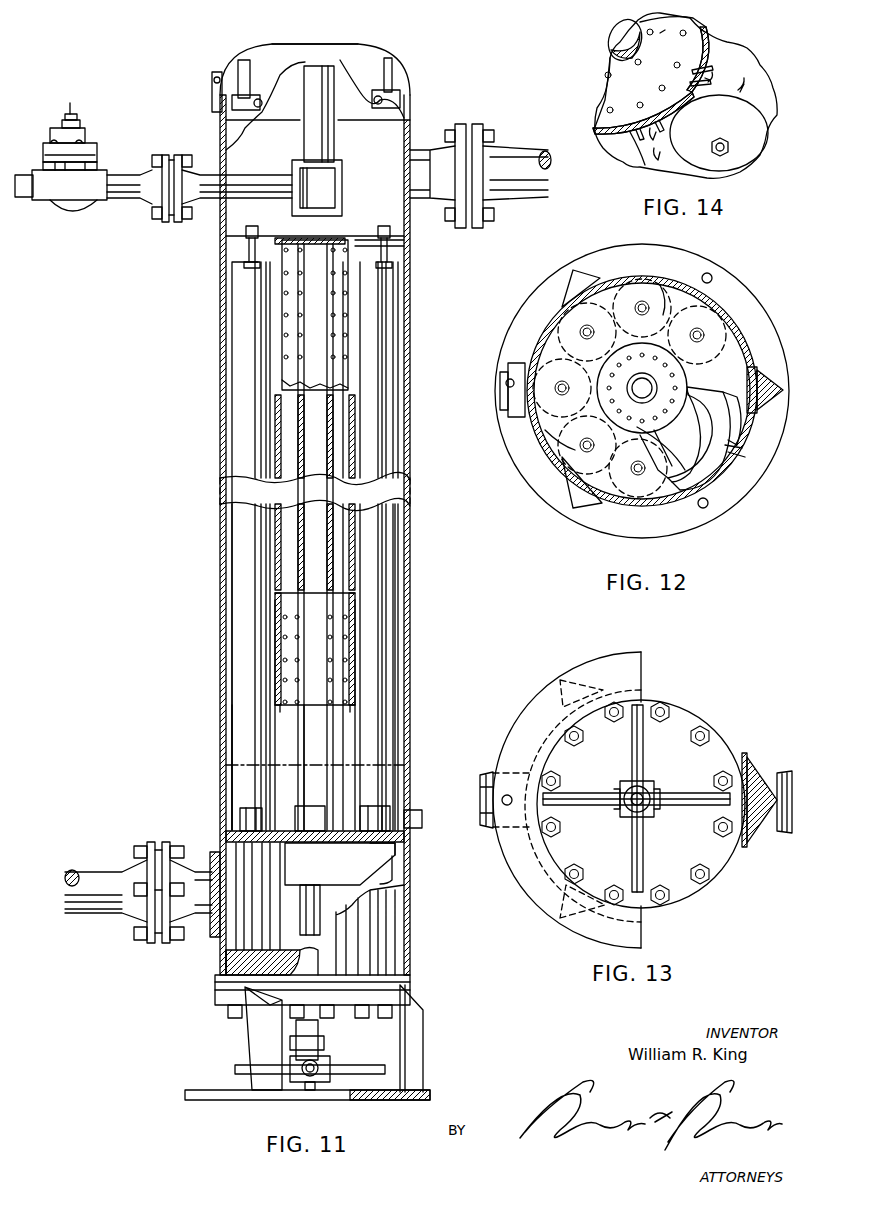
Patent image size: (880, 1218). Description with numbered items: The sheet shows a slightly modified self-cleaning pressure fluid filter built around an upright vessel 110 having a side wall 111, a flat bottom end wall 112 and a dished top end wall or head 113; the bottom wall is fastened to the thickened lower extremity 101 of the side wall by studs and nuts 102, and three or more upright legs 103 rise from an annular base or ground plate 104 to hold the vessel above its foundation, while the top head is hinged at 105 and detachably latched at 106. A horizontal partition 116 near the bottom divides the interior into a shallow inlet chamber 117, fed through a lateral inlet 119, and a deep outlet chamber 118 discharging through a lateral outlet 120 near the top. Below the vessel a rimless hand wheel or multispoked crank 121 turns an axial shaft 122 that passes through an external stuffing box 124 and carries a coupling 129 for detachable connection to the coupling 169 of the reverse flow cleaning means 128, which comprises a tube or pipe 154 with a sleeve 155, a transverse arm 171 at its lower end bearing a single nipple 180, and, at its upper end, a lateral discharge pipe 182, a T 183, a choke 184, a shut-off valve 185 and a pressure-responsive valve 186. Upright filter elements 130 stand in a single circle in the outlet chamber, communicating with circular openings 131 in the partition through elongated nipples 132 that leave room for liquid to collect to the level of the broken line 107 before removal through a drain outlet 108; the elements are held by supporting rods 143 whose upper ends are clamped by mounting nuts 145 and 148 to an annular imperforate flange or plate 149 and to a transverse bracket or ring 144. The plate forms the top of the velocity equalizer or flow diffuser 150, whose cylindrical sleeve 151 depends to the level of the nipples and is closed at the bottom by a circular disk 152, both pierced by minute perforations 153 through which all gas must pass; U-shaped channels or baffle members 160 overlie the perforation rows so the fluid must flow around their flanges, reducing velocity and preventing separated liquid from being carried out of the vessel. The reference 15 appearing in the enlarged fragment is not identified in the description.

In FIG. 14, the section indication 15 is at (653, 35).
In FIG. 11, the lower extremity 101 is at (216, 958).
In FIG. 11, the studs and nuts 102 is at (226, 1016).
In FIG. 13, the studs and nuts 102 is at (700, 866).
In FIG. 11, the upright legs 103 is at (425, 1026).
In FIG. 12, the upright legs 103 is at (576, 502).
In FIG. 13, the upright legs 103 is at (758, 782).
In FIG. 11, the annular base or ground plate 104 is at (206, 1090).
In FIG. 12, the annular base or ground plate 104 is at (742, 284).
In FIG. 13, the annular base or ground plate 104 is at (538, 900).
In FIG. 11, the hinge 105 is at (212, 93).
In FIG. 11, the latch 106 is at (407, 82).
In FIG. 11, the broken line 107 is at (350, 768).
In FIG. 11, the drain outlet 108 is at (420, 812).
In FIG. 12, the drain outlet 108 is at (768, 382).
In FIG. 11, the upright vessel 110 is at (226, 380).
In FIG. 11, the side wall 111 is at (412, 506).
In FIG. 11, the bottom end wall 112 is at (402, 986).
In FIG. 13, the bottom end wall 112 is at (682, 705).
In FIG. 11, the top end wall or head 113 is at (352, 50).
In FIG. 11, the partition 116 is at (350, 843).
In FIG. 14, the partition 116 is at (760, 87).
In FIG. 11, the inlet chamber 117 is at (396, 893).
In FIG. 11, the outlet chamber 118 is at (268, 150).
In FIG. 11, the lateral inlet 119 is at (106, 918).
In FIG. 12, the lateral inlet 119 is at (511, 388).
In FIG. 13, the lateral inlet 119 is at (486, 774).
In FIG. 11, the lateral outlet 120 is at (516, 196).
In FIG. 13, the lateral outlet 120 is at (785, 838).
In FIG. 11, the hand wheel or multispoked crank 121 is at (312, 942).
In FIG. 13, the hand wheel or multispoked crank 121 is at (690, 784).
In FIG. 13, the axial shaft 122 is at (632, 797).
In FIG. 11, the stuffing box 124 is at (325, 1028).
In FIG. 13, the stuffing box 124 is at (650, 815).
In FIG. 11, the reverse flow cleaning means 128 is at (356, 748).
In FIG. 11, the coupling 129 is at (322, 926).
In FIG. 11, the filter elements 130 is at (240, 540).
In FIG. 14, the filter elements 130 is at (757, 132).
In FIG. 12, the filter elements 130 is at (710, 462).
In FIG. 11, the circular openings 131 is at (248, 826).
In FIG. 11, the nipples 132 is at (240, 780).
In FIG. 11, the supporting rods 143 is at (380, 248).
In FIG. 14, the supporting rods 143 is at (726, 155).
In FIG. 11, the bracket or ring 144 is at (246, 240).
In FIG. 12, the bracket or ring 144 is at (737, 397).
In FIG. 11, the mounting nuts 145 is at (384, 230).
In FIG. 12, the mounting nuts 145 is at (584, 330).
In FIG. 11, the mounting nuts 148 is at (250, 266).
In FIG. 11, the annular imperforate flange or plate 149 is at (285, 220).
In FIG. 12, the annular imperforate flange or plate 149 is at (668, 292).
In FIG. 11, the velocity equalizer or flow diffuser 150 is at (278, 633).
In FIG. 14, the velocity equalizer or flow diffuser 150 is at (713, 48).
In FIG. 12, the velocity equalizer or flow diffuser 150 is at (545, 432).
In FIG. 11, the cylindrical sleeve or wall 151 is at (356, 342).
In FIG. 14, the cylindrical sleeve or wall 151 is at (597, 131).
In FIG. 12, the cylindrical sleeve or wall 151 is at (735, 432).
In FIG. 11, the circular plate or disk 152 is at (285, 706).
In FIG. 14, the circular plate or disk 152 is at (608, 90).
In FIG. 12, the circular plate or disk 152 is at (652, 405).
In FIG. 11, the perforations 153 is at (352, 630).
In FIG. 14, the perforations 153 is at (690, 68).
In FIG. 12, the perforations 153 is at (612, 363).
In FIG. 11, the tube or pipe 154 is at (302, 750).
In FIG. 14, the tube or pipe 154 is at (623, 48).
In FIG. 12, the tube or pipe 154 is at (648, 380).
In FIG. 11, the sleeve 155 is at (293, 816).
In FIG. 11, the channels or baffle members 160 is at (352, 410).
In FIG. 14, the channels or baffle members 160 is at (630, 128).
In FIG. 12, the channels or baffle members 160 is at (672, 485).
In FIG. 11, the coupling 169 is at (304, 888).
In FIG. 11, the transverse arm 171 is at (395, 872).
In FIG. 11, the nipple 180 is at (397, 846).
In FIG. 11, the lateral discharge conductor or pipe 182 is at (125, 176).
In FIG. 11, the T 183 is at (342, 188).
In FIG. 11, the choke 184 is at (160, 224).
In FIG. 11, the shut-off valve 185 is at (72, 108).
In FIG. 11, the pressure-responsive valve 186 is at (336, 140).